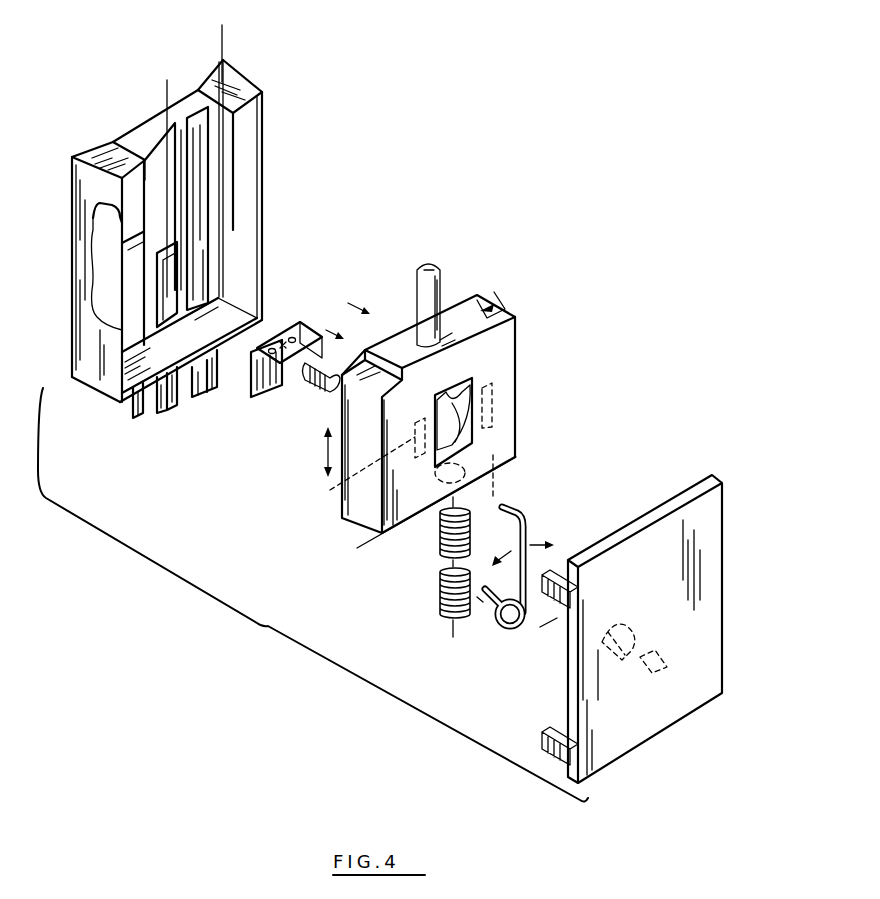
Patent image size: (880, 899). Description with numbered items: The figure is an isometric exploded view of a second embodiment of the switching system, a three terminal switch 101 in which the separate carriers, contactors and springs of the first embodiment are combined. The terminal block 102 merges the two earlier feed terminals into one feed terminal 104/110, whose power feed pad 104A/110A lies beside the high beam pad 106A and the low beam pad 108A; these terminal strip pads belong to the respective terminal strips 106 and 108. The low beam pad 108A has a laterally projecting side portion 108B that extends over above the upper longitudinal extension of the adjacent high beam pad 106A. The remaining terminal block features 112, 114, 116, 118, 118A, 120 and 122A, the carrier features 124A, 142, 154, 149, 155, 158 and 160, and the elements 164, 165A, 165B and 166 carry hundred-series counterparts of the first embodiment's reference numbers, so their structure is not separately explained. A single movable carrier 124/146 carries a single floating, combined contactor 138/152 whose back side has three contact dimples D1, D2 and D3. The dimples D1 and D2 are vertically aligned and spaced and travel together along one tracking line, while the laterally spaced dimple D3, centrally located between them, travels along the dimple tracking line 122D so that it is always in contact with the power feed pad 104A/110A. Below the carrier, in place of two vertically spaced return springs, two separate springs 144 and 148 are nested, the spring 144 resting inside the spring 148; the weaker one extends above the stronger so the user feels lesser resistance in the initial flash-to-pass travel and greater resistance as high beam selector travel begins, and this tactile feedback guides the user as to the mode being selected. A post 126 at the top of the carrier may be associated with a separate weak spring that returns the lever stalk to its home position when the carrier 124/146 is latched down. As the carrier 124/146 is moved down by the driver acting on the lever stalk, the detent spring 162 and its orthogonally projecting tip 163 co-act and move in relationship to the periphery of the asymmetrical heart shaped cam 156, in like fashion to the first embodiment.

The switch 101 is at (257, 625).
The terminal block 102 is at (272, 52).
The feed terminal 104 is at (236, 386).
The feed terminal 110 is at (200, 382).
The power feed pad 104A is at (287, 208).
The power feed pad 110A is at (207, 177).
The rib 106 is at (168, 402).
The high beam pad 106A is at (160, 293).
The rib 108 is at (135, 420).
The low beam pad 108A is at (130, 250).
The side portion 108B is at (178, 235).
The side wall 112 is at (103, 400).
The back wall 114 is at (247, 212).
The bottom wall 116 is at (240, 310).
The top wall 118 is at (124, 137).
The top wall tabs 118A is at (72, 157).
The slot 120 is at (184, 108).
The slot edge 122A is at (160, 120).
The dimple tracking line 122D is at (222, 25).
The movable carrier 124 is at (409, 408).
The movable carrier 146 is at (282, 502).
The shoulder 124A is at (356, 360).
The post 126 is at (442, 268).
The floating contactor 138 is at (344, 322).
The floating contactor 152 is at (330, 352).
The screw 142 is at (281, 415).
The adjusting screw 154 is at (305, 380).
The spring 144 is at (440, 535).
The spring 148 is at (440, 597).
The bore 149 is at (492, 475).
The pocket 155 is at (493, 405).
The heart shaped cam 156 is at (467, 427).
The shaft 158 is at (357, 548).
The window 160 is at (477, 400).
The detent spring 162 is at (562, 528).
The projecting tip 163 is at (520, 508).
The door 164 is at (736, 552).
The hole 165A is at (675, 669).
The hole 165B is at (602, 642).
The clip 166 is at (546, 752).
The contact dimple D1 is at (255, 352).
The contact dimple D2 is at (297, 360).
The contact dimple D3 is at (318, 325).